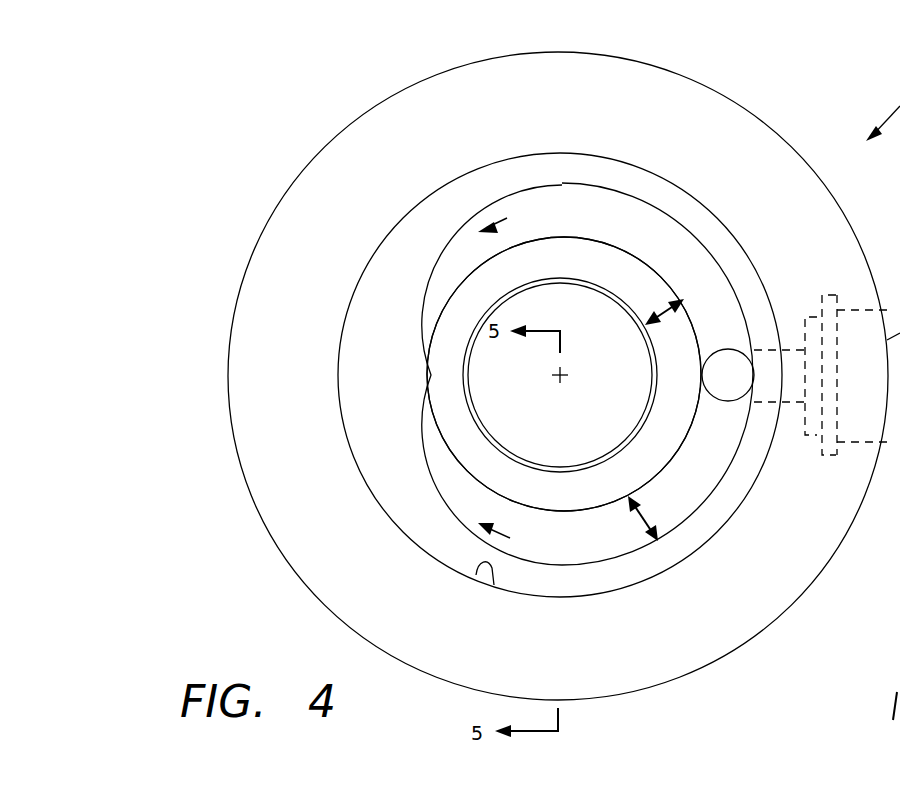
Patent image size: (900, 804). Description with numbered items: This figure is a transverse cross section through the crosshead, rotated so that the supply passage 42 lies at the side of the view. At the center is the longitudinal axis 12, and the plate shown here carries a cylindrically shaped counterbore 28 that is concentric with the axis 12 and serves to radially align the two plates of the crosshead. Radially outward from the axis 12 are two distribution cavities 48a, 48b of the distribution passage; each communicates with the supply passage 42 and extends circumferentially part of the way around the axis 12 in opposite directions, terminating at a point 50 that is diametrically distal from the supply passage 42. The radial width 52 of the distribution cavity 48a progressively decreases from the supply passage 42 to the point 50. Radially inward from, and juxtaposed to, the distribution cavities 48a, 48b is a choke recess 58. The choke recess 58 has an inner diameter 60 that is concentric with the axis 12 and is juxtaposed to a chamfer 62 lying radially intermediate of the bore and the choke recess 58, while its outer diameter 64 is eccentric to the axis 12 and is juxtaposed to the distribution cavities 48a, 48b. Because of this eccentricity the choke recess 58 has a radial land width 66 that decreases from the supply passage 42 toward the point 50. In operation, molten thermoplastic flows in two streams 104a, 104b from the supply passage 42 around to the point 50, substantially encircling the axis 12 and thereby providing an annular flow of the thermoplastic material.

The longitudinal axis 12 is at (566, 371).
The counterbore 28 is at (476, 575).
The supply passage 42 is at (797, 402).
The distribution cavity 48a is at (576, 566).
The distribution cavity 48b is at (660, 208).
The point 50 is at (431, 375).
The radial width 52 is at (647, 510).
The choke recess 58 is at (664, 452).
The inner diameter 60 is at (484, 433).
The chamfer 62 is at (562, 466).
The outer diameter 64 is at (585, 512).
The radial land width 66 is at (667, 313).
The stream 104a is at (510, 538).
The stream 104b is at (507, 218).